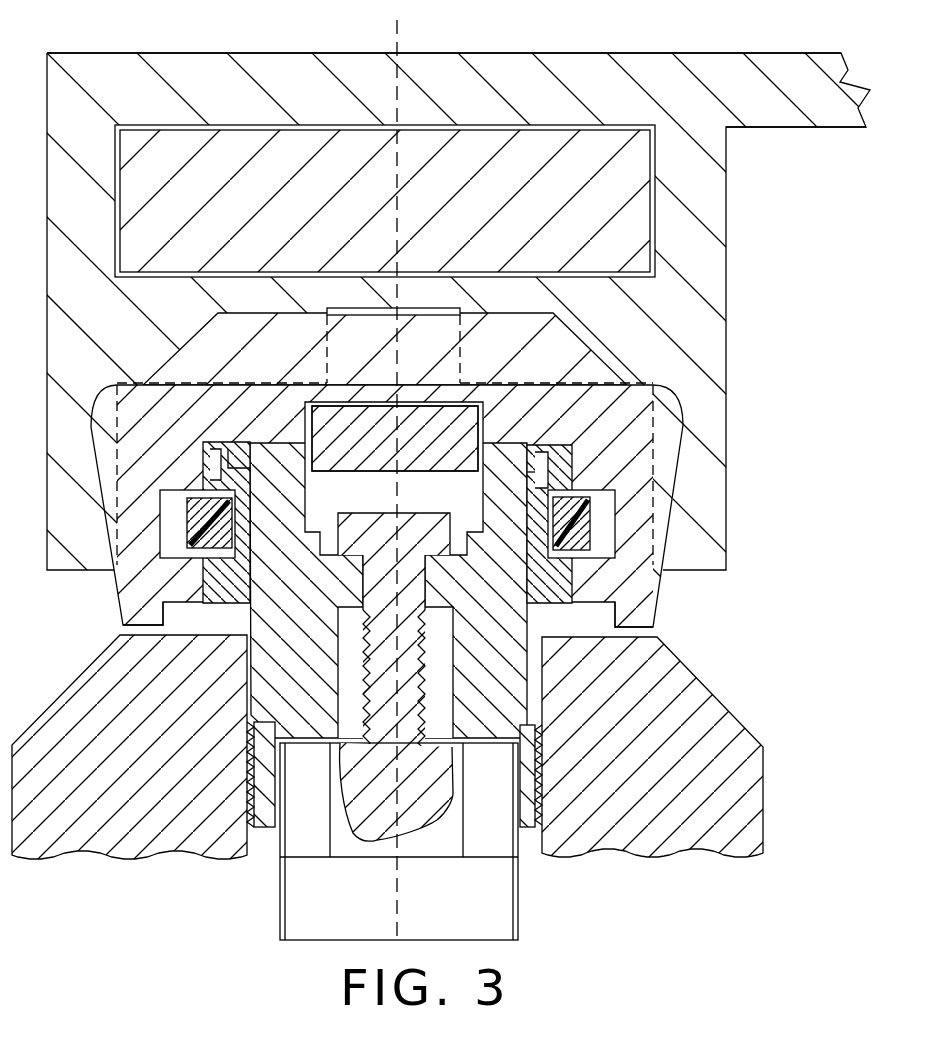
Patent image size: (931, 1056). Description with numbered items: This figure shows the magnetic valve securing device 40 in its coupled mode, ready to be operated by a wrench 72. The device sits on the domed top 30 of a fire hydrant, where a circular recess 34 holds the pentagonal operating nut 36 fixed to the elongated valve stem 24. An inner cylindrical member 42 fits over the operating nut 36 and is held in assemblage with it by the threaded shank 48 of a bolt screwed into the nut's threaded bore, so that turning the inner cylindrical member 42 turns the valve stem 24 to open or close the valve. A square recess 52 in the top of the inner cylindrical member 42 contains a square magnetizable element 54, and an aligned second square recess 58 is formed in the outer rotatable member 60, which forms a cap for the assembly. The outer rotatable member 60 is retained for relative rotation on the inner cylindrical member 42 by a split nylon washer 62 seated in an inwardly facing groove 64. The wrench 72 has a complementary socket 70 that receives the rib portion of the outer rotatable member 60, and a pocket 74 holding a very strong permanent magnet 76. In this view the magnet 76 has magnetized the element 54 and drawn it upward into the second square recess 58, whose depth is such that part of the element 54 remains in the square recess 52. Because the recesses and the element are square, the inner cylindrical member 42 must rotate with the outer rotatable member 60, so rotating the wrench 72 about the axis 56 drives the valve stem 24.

The elongated valve stem 24 is at (485, 918).
The domed top 30 is at (757, 800).
The circular recess 34 is at (518, 827).
The pentagonal operating nut 36 is at (300, 835).
The magnetic valve securing device 40 is at (78, 434).
The inner cylindrical member 42 is at (310, 636).
The threaded shank 48 is at (410, 655).
The square recess 52 is at (378, 505).
The magnetizable element 54 is at (440, 455).
The axis 56 is at (390, 42).
The second square recess 58 is at (370, 403).
The outer rotatable member 60 is at (648, 582).
The split nylon washer 62 is at (205, 558).
The inwardly facing groove 64 is at (165, 512).
The complementary socket 70 is at (642, 368).
The wrench 72 is at (700, 229).
The pocket 74 is at (597, 127).
The permanent magnet 76 is at (530, 246).